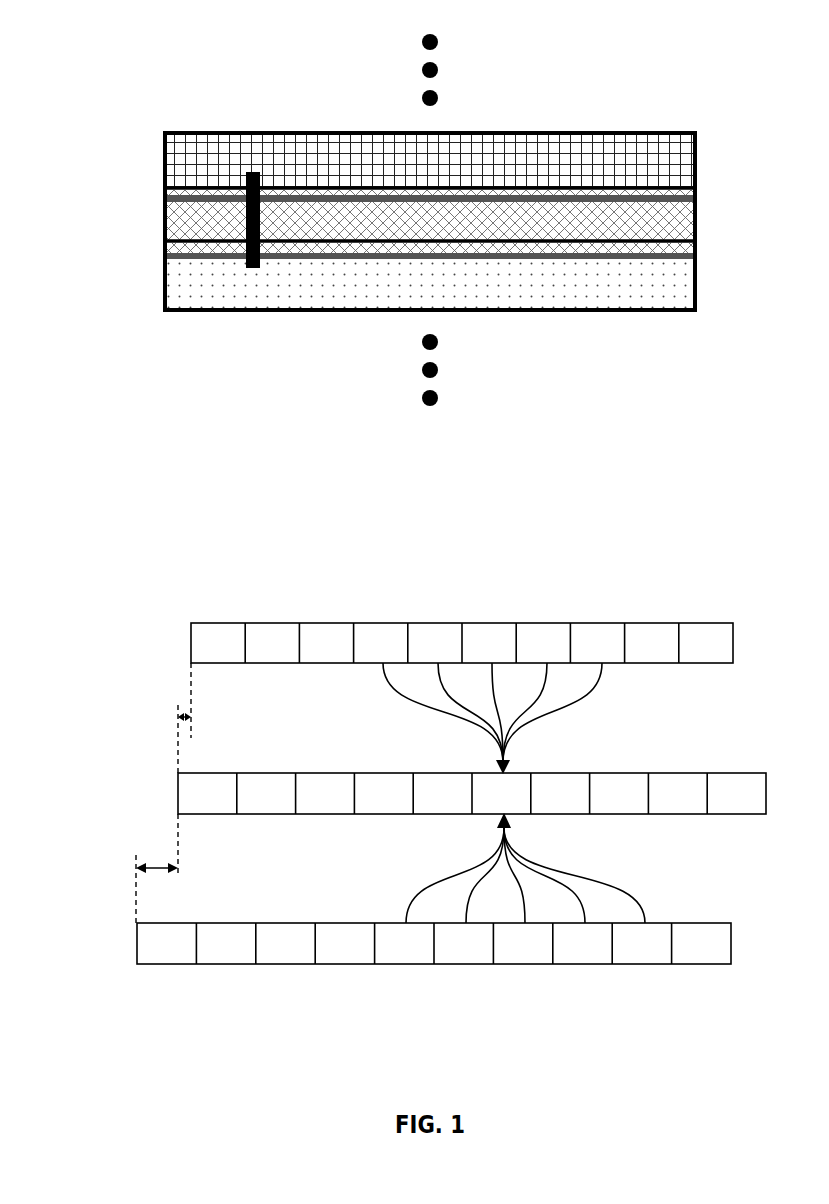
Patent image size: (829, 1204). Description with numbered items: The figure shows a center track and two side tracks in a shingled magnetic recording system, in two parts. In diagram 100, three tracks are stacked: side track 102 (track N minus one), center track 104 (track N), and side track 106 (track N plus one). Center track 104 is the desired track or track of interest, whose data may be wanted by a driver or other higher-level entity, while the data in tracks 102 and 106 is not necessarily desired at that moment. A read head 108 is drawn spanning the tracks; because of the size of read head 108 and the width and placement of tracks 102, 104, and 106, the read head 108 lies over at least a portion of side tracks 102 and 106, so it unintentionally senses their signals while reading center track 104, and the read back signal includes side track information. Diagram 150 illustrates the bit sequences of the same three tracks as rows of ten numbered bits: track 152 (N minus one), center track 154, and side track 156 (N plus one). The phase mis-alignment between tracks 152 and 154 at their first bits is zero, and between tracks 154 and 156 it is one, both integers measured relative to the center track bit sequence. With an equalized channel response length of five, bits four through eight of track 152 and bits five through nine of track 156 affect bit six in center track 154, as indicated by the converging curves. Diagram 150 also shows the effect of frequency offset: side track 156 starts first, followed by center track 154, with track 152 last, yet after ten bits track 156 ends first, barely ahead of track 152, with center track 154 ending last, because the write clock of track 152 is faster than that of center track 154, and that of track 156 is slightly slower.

The diagram 100 is at (660, 31).
The side track N-1 102 is at (699, 168).
The center track N 104 is at (699, 222).
The side track N+1 106 is at (699, 275).
The read head 108 is at (250, 172).
The diagram 150 is at (658, 563).
The track N-1 152 is at (733, 641).
The center track 154 is at (766, 796).
The side track N+1 156 is at (731, 933).